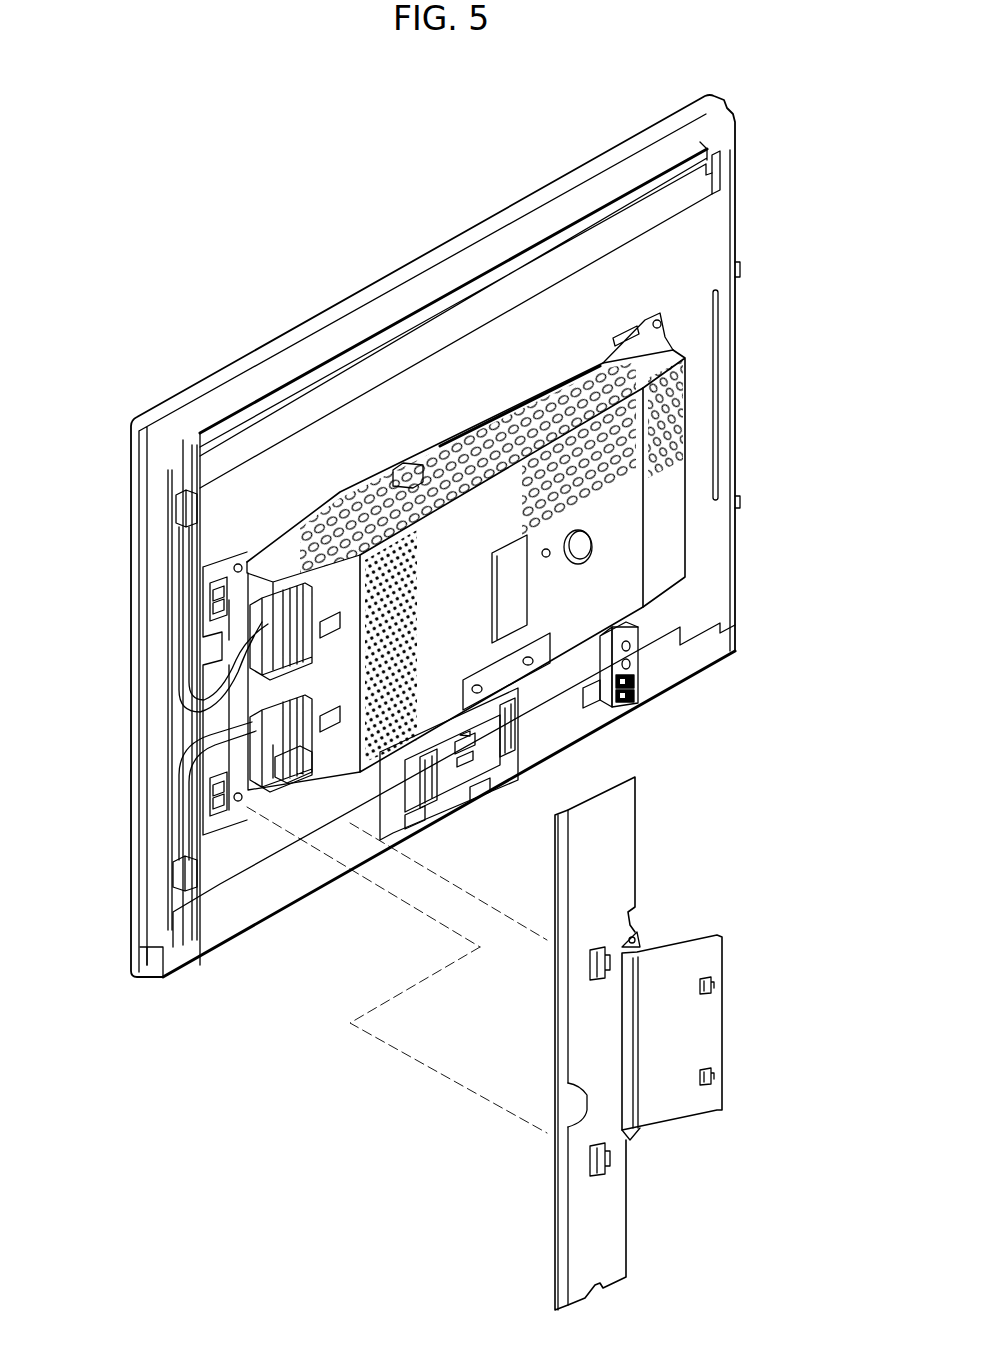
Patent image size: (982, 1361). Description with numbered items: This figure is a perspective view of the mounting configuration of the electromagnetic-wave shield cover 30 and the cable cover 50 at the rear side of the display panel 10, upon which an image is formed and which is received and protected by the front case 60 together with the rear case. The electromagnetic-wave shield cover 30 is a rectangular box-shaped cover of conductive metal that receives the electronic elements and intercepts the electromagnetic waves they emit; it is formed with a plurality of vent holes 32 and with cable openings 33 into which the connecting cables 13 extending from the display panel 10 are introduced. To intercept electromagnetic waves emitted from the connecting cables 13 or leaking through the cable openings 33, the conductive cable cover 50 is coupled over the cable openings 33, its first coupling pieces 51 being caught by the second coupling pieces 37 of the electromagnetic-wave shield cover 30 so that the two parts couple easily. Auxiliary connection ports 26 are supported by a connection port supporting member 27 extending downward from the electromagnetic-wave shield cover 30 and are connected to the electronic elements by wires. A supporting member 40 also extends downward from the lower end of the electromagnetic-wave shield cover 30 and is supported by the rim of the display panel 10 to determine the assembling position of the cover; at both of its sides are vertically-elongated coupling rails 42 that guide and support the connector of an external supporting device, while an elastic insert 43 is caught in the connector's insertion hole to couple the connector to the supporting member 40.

The display panel 10 is at (727, 232).
The connecting cables 13 is at (193, 748).
The auxiliary connection ports 26 is at (633, 665).
The connection port supporting member 27 is at (615, 697).
The electromagnetic-wave shield cover 30 is at (675, 537).
The vent holes 32 is at (685, 410).
The cable openings 33 is at (262, 727).
The second coupling pieces 37 is at (232, 600).
The supporting member 40 is at (395, 838).
The coupling rails 42 is at (517, 757).
The elastic insert 43 is at (470, 780).
The cable cover 50 is at (580, 1040).
The first coupling pieces 51 is at (590, 963).
The front case 60 is at (523, 205).